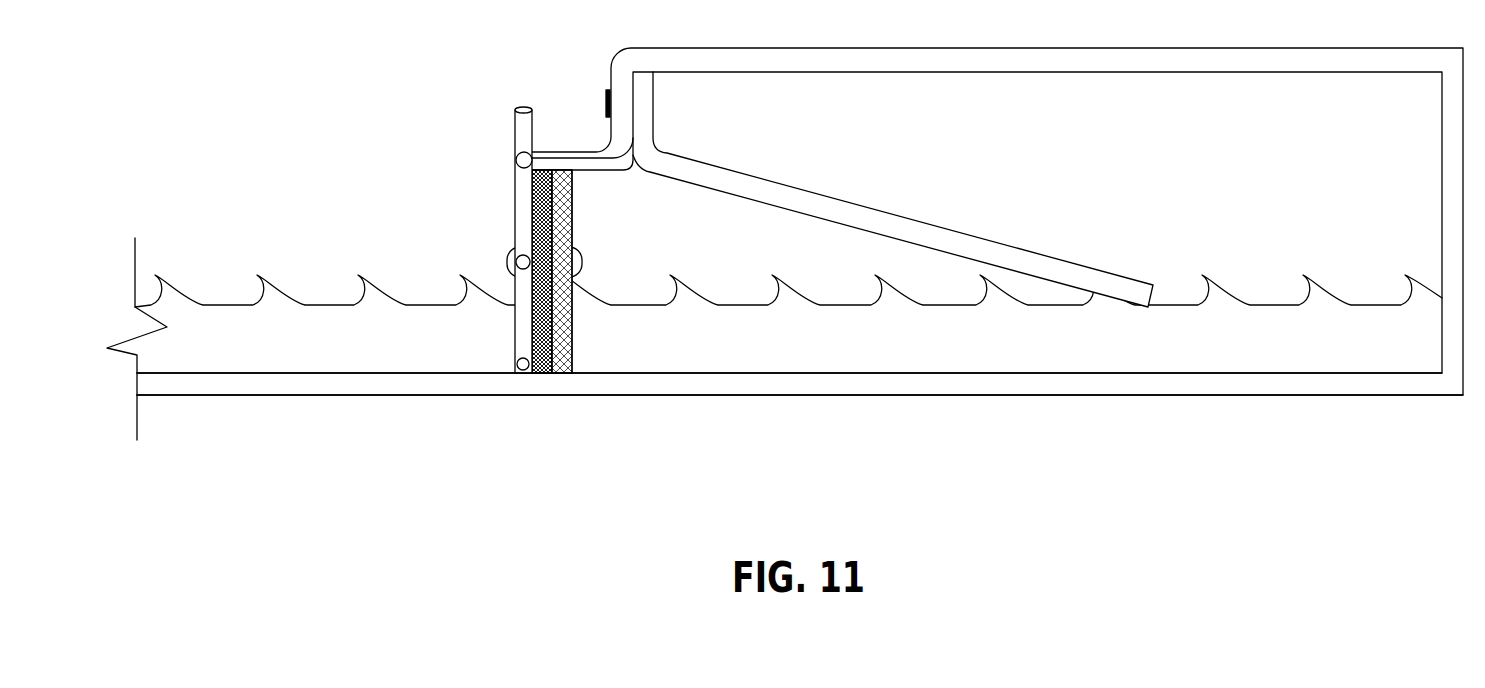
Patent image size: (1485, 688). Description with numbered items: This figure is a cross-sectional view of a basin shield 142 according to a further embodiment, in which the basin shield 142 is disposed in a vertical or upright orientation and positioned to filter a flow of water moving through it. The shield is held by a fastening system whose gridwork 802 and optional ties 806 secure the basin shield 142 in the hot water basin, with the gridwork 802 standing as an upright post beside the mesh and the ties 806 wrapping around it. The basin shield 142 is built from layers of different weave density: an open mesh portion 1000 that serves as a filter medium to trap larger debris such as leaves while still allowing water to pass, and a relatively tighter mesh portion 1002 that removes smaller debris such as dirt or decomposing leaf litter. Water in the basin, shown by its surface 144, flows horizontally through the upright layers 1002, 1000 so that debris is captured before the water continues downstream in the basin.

The gridwork 802 is at (513, 157).
The ties 806 is at (505, 257).
The tighter mesh portion 1002 is at (533, 227).
The open mesh portion 1000 is at (563, 228).
The basin shield 142 is at (570, 197).
The surface of water 144 is at (873, 275).